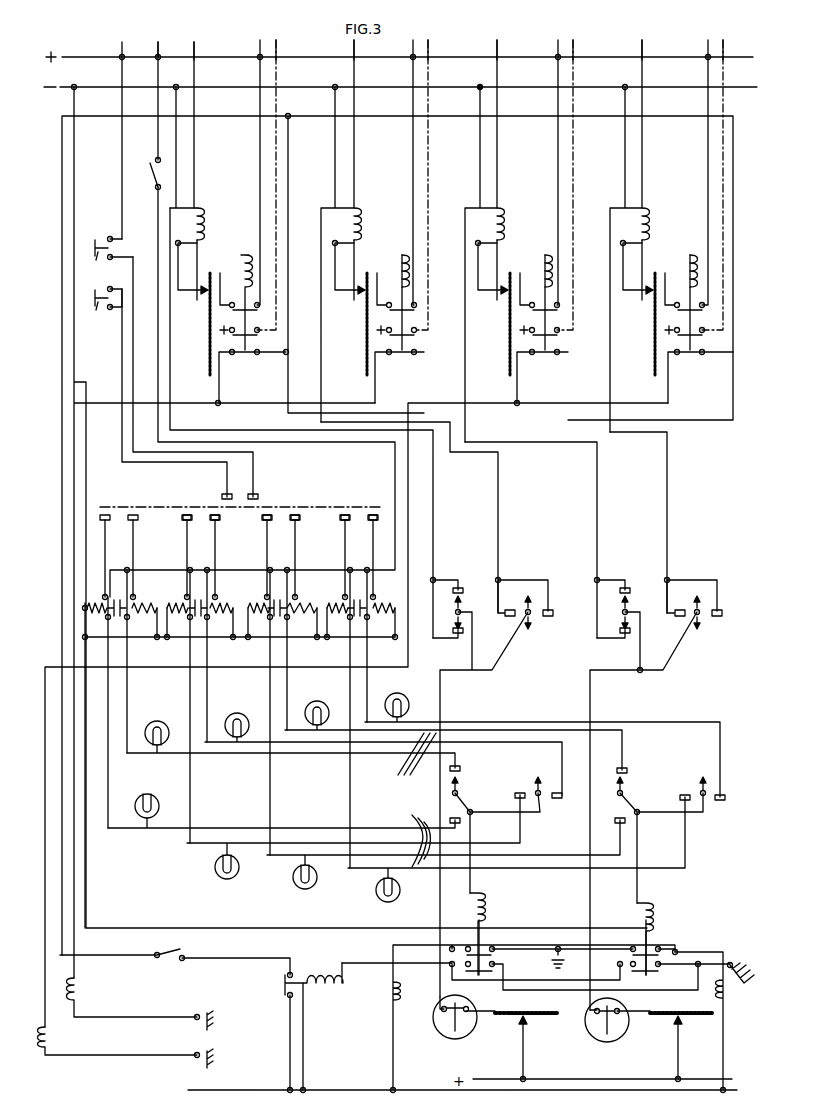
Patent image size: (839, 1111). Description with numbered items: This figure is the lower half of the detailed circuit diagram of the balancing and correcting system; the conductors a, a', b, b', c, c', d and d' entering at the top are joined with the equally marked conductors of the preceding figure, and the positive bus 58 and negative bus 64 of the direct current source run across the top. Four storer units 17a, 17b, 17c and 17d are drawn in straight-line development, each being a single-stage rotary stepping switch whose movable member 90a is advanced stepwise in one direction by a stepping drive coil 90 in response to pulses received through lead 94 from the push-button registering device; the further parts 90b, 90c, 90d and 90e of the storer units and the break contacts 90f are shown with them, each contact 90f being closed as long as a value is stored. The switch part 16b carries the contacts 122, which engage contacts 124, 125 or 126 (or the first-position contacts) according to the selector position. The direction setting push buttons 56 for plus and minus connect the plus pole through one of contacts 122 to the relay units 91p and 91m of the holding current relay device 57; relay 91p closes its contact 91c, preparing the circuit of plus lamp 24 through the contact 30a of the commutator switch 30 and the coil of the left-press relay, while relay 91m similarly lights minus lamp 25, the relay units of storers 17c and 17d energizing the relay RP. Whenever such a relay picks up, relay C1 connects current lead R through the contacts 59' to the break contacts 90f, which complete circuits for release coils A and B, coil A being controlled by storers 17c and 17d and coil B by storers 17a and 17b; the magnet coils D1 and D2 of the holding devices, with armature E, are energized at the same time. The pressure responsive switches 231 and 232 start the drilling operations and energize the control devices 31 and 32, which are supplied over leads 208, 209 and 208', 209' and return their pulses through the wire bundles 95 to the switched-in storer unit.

The positive bus 58 is at (399, 50).
The negative bus 64 is at (400, 78).
The lead 94 is at (218, 52).
The contacts of switch 59 59' is at (175, 567).
The direction setting push buttons 56 is at (105, 274).
The stepping drive coil 90 is at (201, 214).
The storer unit 17a is at (236, 233).
The storer unit 17b is at (397, 233).
The storer unit 17c is at (540, 233).
The storer unit 17d is at (685, 233).
The movable member 90a is at (186, 293).
The contact strip 90b is at (206, 351).
The contact 90c is at (262, 313).
The relay coil 90d is at (252, 271).
The contact 90e is at (262, 334).
The break contacts 90f is at (240, 355).
The switch part 16b is at (369, 481).
The contacts 122 is at (258, 492).
The contacts 124 is at (210, 513).
The contacts 125 is at (270, 514).
The contacts 126 is at (372, 514).
The holding current relay device 57 is at (244, 593).
The relay unit 91p is at (156, 594).
The contact 91c is at (126, 618).
The relay unit 91m is at (86, 614).
The commutator switch 30 is at (554, 655).
The plus lamp 24 is at (158, 722).
The minus lamp 25 is at (138, 801).
The wire bundle 95 is at (407, 800).
The switch member 30a is at (466, 789).
The auxiliary control relay RP is at (656, 914).
The magnet coil D1 is at (404, 991).
The magnet coil D2 is at (727, 1010).
The armature contact E is at (727, 986).
The pressure responsive switch 231 is at (436, 1032).
The pressure responsive switch 232 is at (594, 1036).
The lead 208 is at (484, 1001).
The lead 208' is at (639, 1001).
The control device 31 is at (536, 1007).
The control device 32 is at (686, 1009).
The lead 209 is at (539, 1049).
The lead 209' is at (696, 1049).
The relay C C1 is at (334, 980).
The current lead R is at (451, 1086).
The release coil A is at (52, 1038).
The release coil B is at (78, 989).
The electric conductor a is at (171, 47).
The electric conductor a' is at (264, 46).
The electric conductor b is at (341, 48).
The electric conductor b' is at (415, 47).
The electric conductor c is at (486, 48).
The electric conductor c' is at (560, 47).
The electric conductor d is at (633, 48).
The electric conductor d' is at (710, 47).